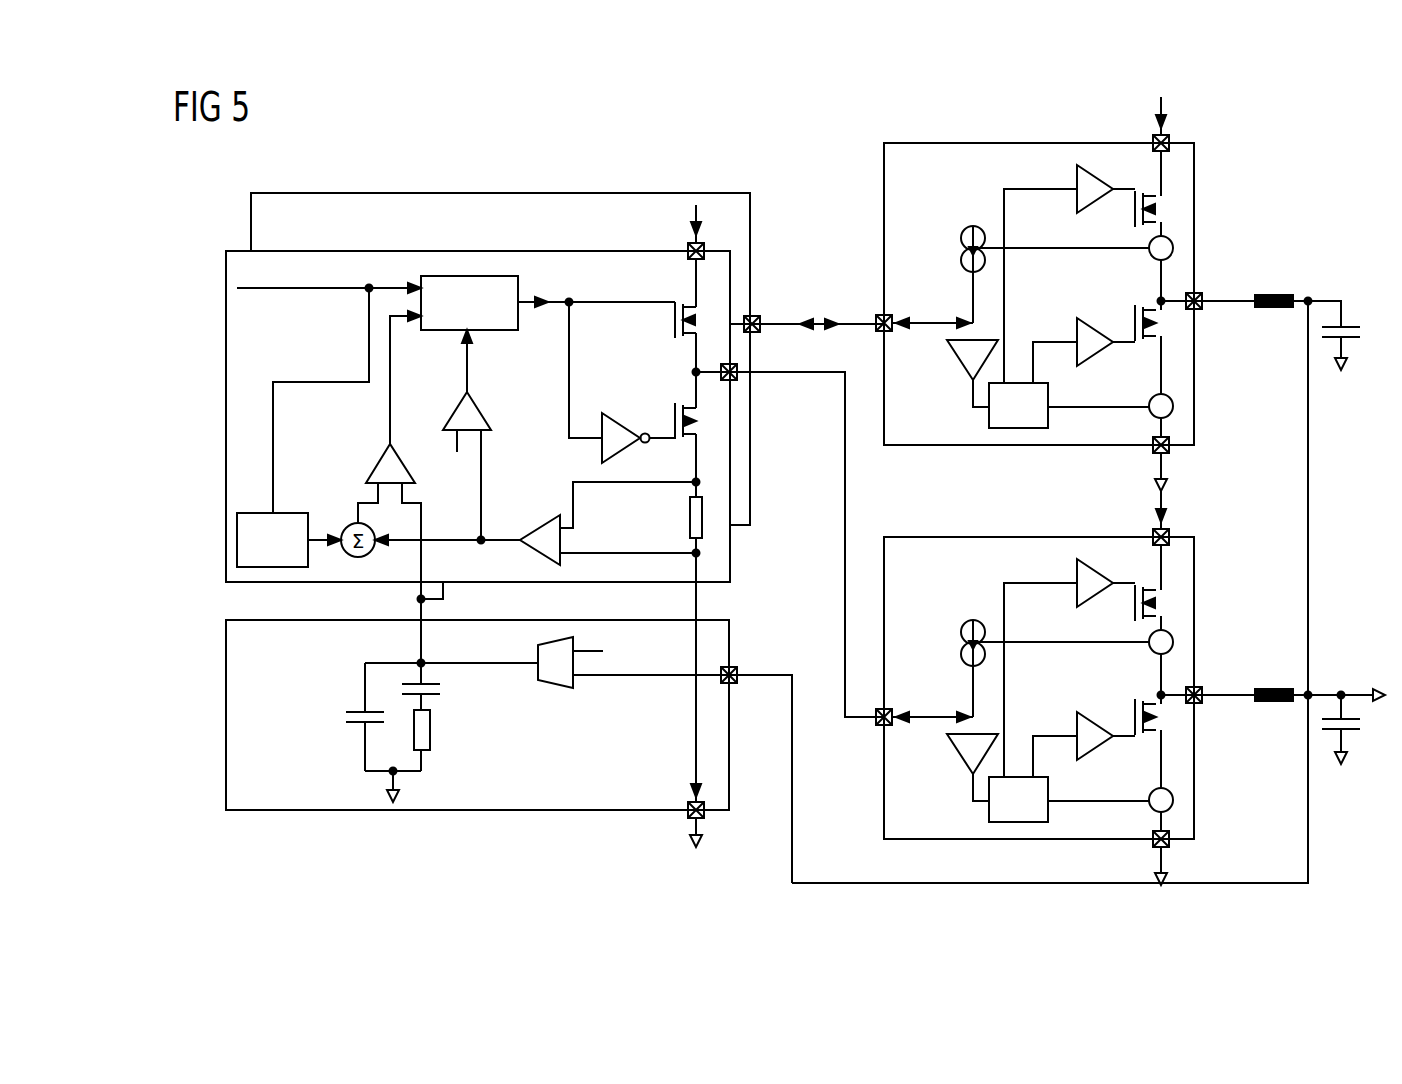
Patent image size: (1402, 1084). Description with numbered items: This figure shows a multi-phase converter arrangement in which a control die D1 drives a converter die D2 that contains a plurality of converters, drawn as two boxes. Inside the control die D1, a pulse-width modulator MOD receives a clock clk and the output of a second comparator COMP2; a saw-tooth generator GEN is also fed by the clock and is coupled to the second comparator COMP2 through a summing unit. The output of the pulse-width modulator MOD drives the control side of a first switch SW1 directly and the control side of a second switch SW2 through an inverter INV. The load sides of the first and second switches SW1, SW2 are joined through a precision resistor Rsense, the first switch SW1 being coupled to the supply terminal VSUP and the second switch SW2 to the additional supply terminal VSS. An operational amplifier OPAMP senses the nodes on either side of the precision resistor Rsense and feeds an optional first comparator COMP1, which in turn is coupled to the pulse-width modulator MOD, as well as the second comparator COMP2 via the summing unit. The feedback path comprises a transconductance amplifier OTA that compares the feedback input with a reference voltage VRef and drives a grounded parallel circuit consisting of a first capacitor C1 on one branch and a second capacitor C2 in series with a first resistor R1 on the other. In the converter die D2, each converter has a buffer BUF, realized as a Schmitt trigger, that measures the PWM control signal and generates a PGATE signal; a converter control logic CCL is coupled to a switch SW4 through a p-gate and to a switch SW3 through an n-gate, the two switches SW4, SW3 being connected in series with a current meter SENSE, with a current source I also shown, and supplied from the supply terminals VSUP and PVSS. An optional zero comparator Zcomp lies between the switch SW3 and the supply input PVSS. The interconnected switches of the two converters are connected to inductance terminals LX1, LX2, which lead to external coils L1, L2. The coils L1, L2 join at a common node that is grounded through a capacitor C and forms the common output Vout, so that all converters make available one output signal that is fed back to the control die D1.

The control die D1 is at (226, 416).
The clock input clk is at (329, 276).
The pulse-width modulator MOD is at (532, 303).
The first comparator COMP1 is at (512, 388).
The second comparator COMP2 is at (377, 458).
The saw-tooth generator GEN is at (303, 427).
The first switch SW1 is at (671, 420).
The second switch SW2 is at (671, 328).
The inverter INV is at (600, 450).
The operational amplifier OPAMP is at (538, 522).
The precision resistor Rsense is at (688, 518).
The supply terminal VSUP is at (927, 321).
The additional supply terminal VSS is at (717, 828).
The first capacitor C1 is at (345, 718).
The second capacitor C2 is at (444, 690).
The first resistor R1 is at (432, 730).
The transconductance amplifier OTA is at (558, 690).
The reference voltage VRef is at (615, 650).
The converter die D2 is at (1042, 143).
The current source I is at (964, 175).
The current meter SENSE is at (1148, 256).
The switch SW4 is at (1133, 214).
The element p-gate is at (1075, 178).
The element n-gate is at (1116, 380).
The switch SW3 is at (1133, 320).
The zero comparator Zcomp is at (1149, 414).
The supply input PVSS is at (1188, 661).
The buffer BUF is at (960, 368).
The converter control logic CCL is at (1069, 602).
The inductance terminal LX2 is at (1208, 289).
The inductance terminal LX1 is at (1208, 682).
The second coil L2 is at (1272, 310).
The first coil L1 is at (1272, 704).
The capacitor C is at (1350, 335).
The output Vout is at (1362, 678).